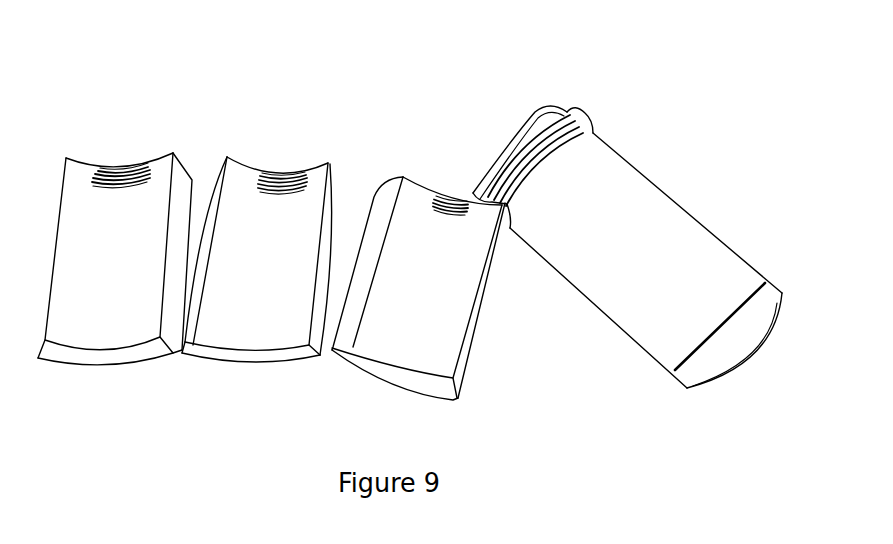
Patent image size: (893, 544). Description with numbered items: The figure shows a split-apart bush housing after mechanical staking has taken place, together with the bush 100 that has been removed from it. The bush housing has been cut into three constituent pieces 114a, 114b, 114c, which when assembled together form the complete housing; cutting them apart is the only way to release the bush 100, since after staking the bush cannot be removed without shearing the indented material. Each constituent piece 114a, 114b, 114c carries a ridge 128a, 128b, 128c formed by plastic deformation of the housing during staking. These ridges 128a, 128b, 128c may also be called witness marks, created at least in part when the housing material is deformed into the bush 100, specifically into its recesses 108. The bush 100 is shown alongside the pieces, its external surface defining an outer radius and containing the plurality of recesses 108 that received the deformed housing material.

The bush 100 is at (637, 149).
The recesses 108 is at (590, 120).
The constituent piece of the bush housing 114a is at (102, 332).
The constituent piece of the bush housing 114b is at (252, 333).
The constituent piece of the bush housing 114c is at (400, 332).
The ridge 128a is at (120, 148).
The ridge 128b is at (284, 155).
The ridge 128c is at (442, 178).